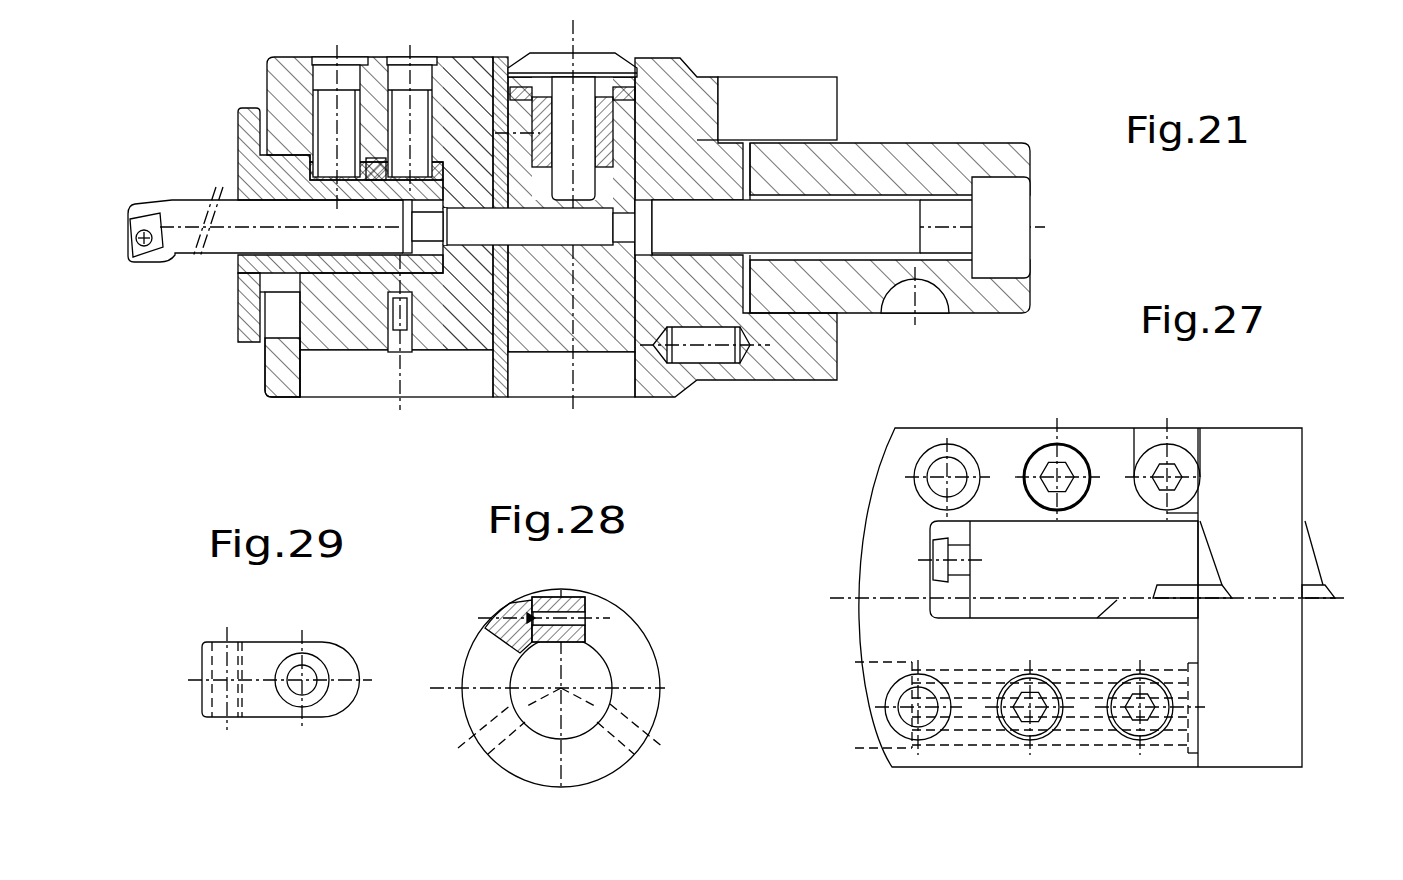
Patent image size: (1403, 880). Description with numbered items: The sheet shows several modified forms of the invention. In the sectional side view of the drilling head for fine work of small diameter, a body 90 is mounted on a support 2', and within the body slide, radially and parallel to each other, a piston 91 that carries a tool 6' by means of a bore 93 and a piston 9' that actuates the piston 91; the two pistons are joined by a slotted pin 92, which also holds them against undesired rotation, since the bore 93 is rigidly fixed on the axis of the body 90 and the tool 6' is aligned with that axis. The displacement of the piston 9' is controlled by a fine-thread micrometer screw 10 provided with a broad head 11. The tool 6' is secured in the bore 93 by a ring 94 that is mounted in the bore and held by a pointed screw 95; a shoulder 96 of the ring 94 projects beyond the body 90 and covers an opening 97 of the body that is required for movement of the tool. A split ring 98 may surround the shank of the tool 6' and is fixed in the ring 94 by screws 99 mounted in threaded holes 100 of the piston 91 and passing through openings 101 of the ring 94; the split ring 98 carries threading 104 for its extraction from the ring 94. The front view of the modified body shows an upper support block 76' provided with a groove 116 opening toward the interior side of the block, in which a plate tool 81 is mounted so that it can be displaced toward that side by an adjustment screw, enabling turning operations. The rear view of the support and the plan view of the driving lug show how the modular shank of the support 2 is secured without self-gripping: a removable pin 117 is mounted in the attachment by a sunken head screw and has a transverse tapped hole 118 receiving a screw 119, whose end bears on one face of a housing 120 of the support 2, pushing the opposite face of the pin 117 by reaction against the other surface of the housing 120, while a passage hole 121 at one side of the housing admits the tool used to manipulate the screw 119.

In FIG. 28, the support 2 is at (547, 679).
In FIG. 21, the support 2' is at (890, 204).
In FIG. 21, the tool 6' is at (139, 270).
In FIG. 21, the piston 9' is at (565, 267).
In FIG. 21, the micrometer screw 10 is at (583, 110).
In FIG. 21, the broad head 11 is at (577, 63).
In FIG. 27, the upper support block 76' is at (1087, 572).
In FIG. 27, the plate tool 81 is at (1205, 607).
In FIG. 21, the body 90 is at (667, 80).
In FIG. 21, the piston 91 is at (458, 338).
In FIG. 21, the slotted pin 92 is at (540, 233).
In FIG. 21, the bore 93 is at (333, 293).
In FIG. 21, the ring 94 is at (292, 278).
In FIG. 21, the pointed screw 95 is at (395, 320).
In FIG. 21, the shoulder 96 is at (243, 312).
In FIG. 21, the opening 97 is at (275, 318).
In FIG. 21, the split ring 98 is at (267, 187).
In FIG. 21, the screws 99 is at (413, 95).
In FIG. 21, the threaded holes 100 is at (383, 125).
In FIG. 21, the openings 101 is at (377, 177).
In FIG. 21, the threading 104 is at (423, 220).
In FIG. 27, the groove 116 is at (930, 603).
In FIG. 28, the removable pin 117 is at (552, 605).
In FIG. 29, the removable pin 117 is at (272, 650).
In FIG. 28, the tapped hole 118 is at (528, 603).
In FIG. 29, the tapped hole 118 is at (213, 660).
In FIG. 28, the screw 119 is at (527, 618).
In FIG. 28, the housing 120 is at (585, 642).
In FIG. 28, the passage hole 121 is at (507, 630).